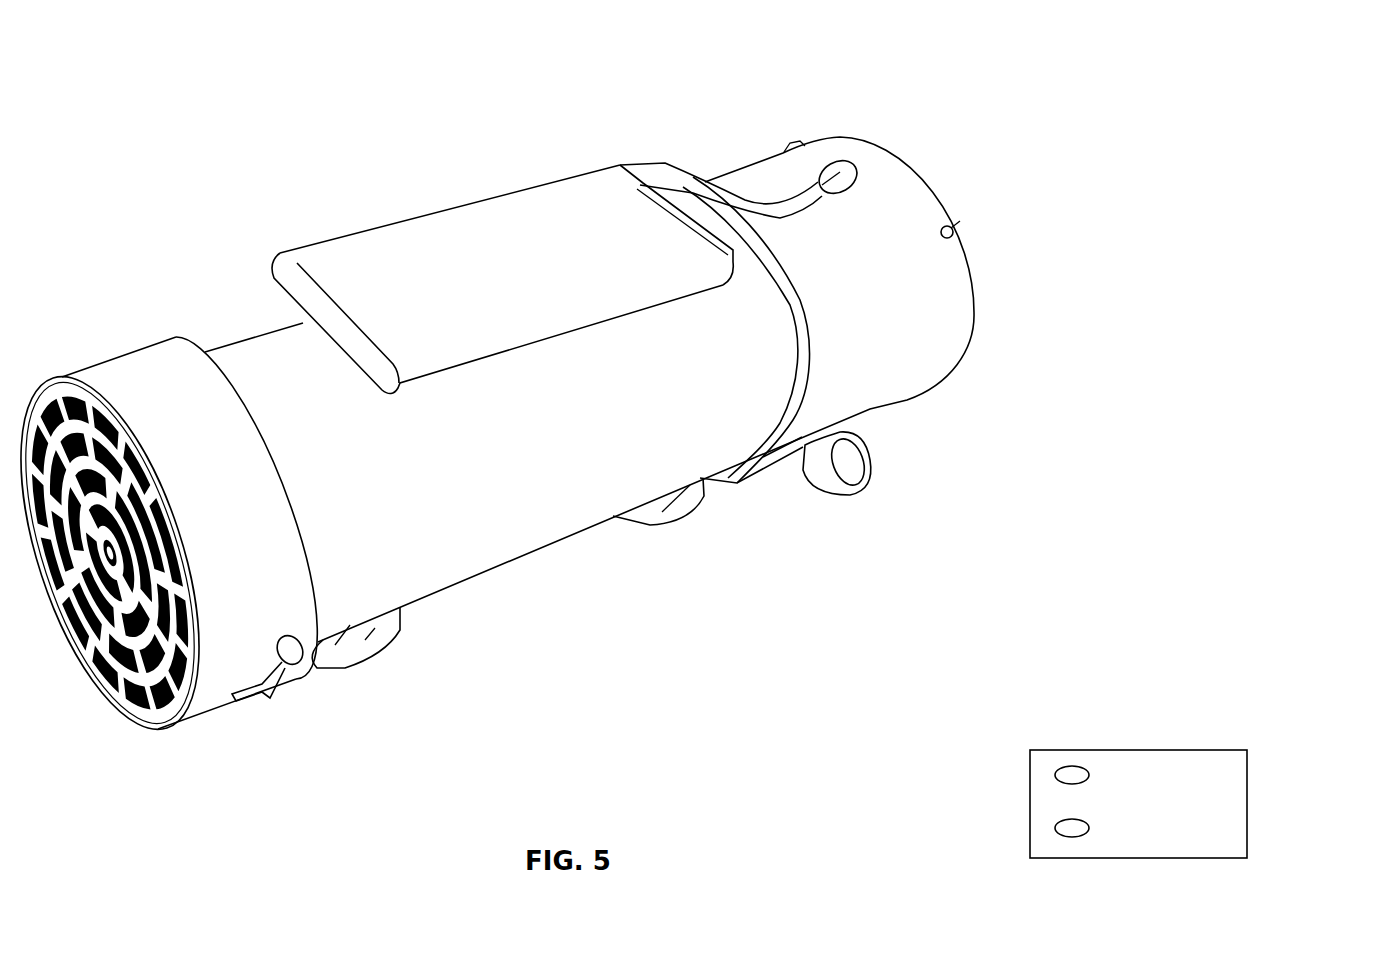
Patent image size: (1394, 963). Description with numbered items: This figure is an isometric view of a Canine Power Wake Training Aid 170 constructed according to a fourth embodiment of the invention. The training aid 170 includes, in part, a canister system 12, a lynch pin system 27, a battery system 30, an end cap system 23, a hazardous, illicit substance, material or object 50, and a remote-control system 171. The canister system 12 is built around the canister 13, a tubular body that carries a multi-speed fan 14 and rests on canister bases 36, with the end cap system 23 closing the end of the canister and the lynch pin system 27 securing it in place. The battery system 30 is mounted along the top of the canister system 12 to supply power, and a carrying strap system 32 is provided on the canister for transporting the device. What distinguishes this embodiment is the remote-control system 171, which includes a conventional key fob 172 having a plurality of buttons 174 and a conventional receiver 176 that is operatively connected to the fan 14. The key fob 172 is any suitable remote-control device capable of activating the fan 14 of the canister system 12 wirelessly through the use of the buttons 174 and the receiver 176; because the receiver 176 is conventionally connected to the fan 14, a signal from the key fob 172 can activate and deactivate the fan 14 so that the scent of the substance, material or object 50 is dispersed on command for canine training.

The canister system 12 is at (650, 338).
The canister 13 is at (600, 555).
The multi-speed fan 14 is at (880, 395).
The end cap system 23 is at (251, 721).
The lynch pin system 27 is at (340, 712).
The battery system 30 is at (626, 138).
The carrying strap system 32 is at (121, 330).
The canister bases 36 is at (392, 646).
The hazardous, illicit substance, material or object 50 is at (667, 462).
The Canine Power Wake Training Aid 170 is at (606, 421).
The remote-control system 171 is at (1151, 742).
The key fob 172 is at (1172, 747).
The buttons 174 is at (1063, 773).
The receiver 176 is at (950, 333).